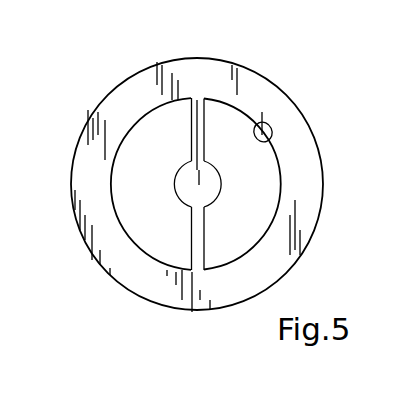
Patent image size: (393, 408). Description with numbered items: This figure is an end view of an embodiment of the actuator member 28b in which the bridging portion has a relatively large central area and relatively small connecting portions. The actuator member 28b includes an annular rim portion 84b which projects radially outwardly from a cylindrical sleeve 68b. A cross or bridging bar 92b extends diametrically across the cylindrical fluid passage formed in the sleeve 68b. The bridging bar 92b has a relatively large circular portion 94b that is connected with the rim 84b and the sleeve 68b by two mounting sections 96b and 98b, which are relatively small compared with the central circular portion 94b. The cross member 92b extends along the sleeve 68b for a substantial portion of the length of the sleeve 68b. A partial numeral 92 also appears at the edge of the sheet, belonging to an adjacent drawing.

The rotor body 28b is at (303, 85).
The inner disc 84b is at (105, 121).
The slot 92b is at (183, 208).
The central opening 94b is at (197, 184).
The slot edge 96b is at (196, 144).
The slot edge 98b is at (203, 239).
The opening 68b is at (272, 140).
The slot 92 is at (384, 213).